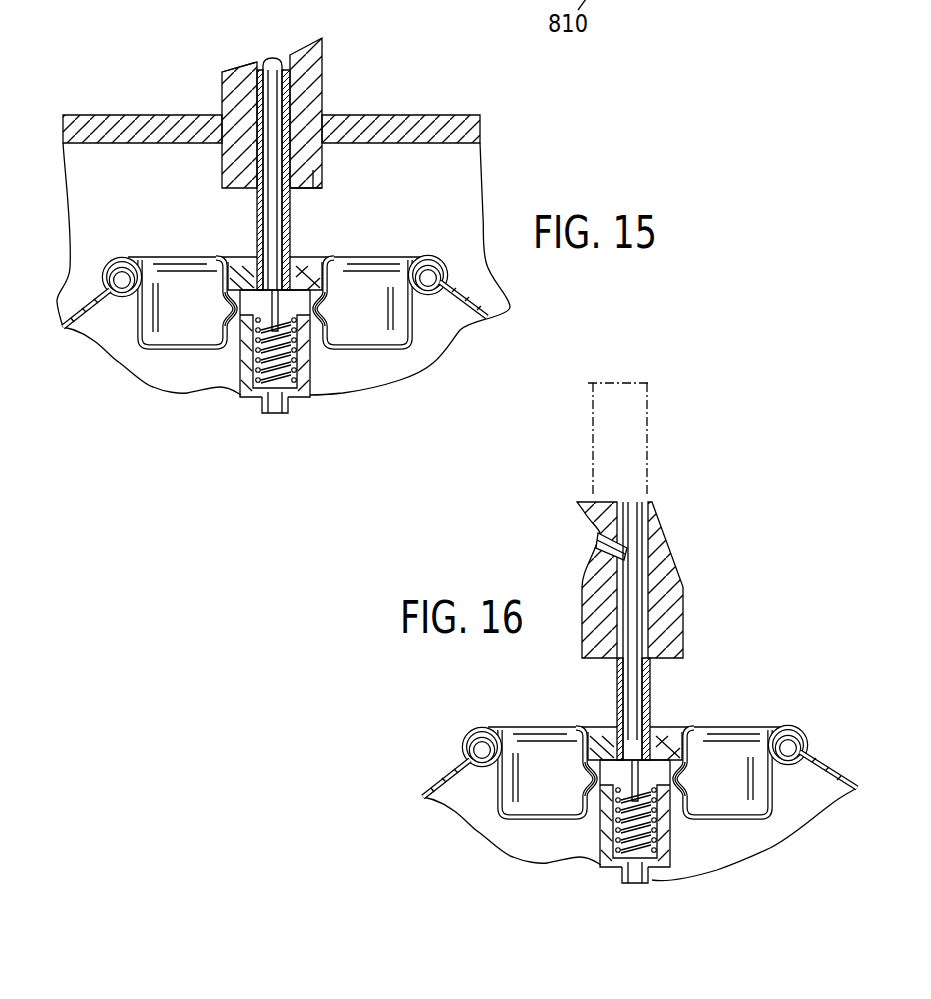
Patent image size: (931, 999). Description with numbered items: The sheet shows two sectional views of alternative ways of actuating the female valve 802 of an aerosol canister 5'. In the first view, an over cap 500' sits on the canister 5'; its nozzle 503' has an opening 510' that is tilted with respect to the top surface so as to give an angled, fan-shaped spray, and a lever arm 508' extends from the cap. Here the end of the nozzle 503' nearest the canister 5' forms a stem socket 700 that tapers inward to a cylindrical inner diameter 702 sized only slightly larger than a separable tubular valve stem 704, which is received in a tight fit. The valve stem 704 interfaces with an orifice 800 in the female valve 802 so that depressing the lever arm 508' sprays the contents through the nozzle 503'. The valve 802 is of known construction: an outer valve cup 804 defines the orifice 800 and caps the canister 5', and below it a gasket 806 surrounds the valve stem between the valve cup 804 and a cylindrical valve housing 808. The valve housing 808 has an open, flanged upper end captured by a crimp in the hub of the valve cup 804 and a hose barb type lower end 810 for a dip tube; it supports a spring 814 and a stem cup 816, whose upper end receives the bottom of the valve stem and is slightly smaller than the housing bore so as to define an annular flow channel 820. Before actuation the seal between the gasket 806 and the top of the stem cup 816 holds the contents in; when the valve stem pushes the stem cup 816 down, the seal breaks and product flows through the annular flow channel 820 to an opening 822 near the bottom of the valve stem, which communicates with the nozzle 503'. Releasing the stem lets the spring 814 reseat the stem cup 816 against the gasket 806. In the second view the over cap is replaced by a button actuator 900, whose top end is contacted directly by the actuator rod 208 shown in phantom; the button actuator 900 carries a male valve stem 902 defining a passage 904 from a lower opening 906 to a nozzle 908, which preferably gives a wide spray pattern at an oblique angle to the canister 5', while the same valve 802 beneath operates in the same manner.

In FIG. 15, the canister 5' is at (258, 294).
In FIG. 16, the canister 5' is at (623, 768).
In FIG. 16, the actuator rod 208 is at (640, 430).
In FIG. 15, the over cap 500' is at (310, 269).
In FIG. 15, the nozzle 503' is at (210, 51).
In FIG. 15, the lever arm 508' is at (279, 104).
In FIG. 15, the opening 510' is at (290, 145).
In FIG. 15, the stem socket 700 is at (295, 112).
In FIG. 15, the cylindrical inner diameter 702 is at (293, 172).
In FIG. 15, the separable tubular valve stem 704 is at (292, 220).
In FIG. 15, the orifice 800 is at (297, 257).
In FIG. 16, the orifice 800 is at (660, 727).
In FIG. 15, the female valve 802 is at (232, 230).
In FIG. 16, the female valve 802 is at (575, 720).
In FIG. 15, the outer valve cup 804 is at (374, 257).
In FIG. 16, the outer valve cup 804 is at (614, 759).
In FIG. 16, the gasket 806 is at (565, 756).
In FIG. 15, the valve housing 808 is at (240, 365).
In FIG. 16, the valve housing 808 is at (668, 813).
In FIG. 15, the hose barb type lower end 810 is at (258, 402).
In FIG. 16, the hose barb type lower end 810 is at (670, 888).
In FIG. 15, the spring 814 is at (298, 351).
In FIG. 16, the spring 814 is at (598, 822).
In FIG. 15, the stem cup 816 is at (234, 309).
In FIG. 16, the stem cup 816 is at (711, 793).
In FIG. 15, the annular flow channel 820 is at (318, 304).
In FIG. 16, the annular flow channel 820 is at (711, 759).
In FIG. 15, the opening 822 is at (238, 278).
In FIG. 16, the button actuator 900 is at (676, 533).
In FIG. 16, the male valve stem 902 is at (647, 688).
In FIG. 16, the passage 904 is at (632, 679).
In FIG. 16, the lower opening 906 is at (556, 783).
In FIG. 16, the nozzle 908 is at (600, 554).